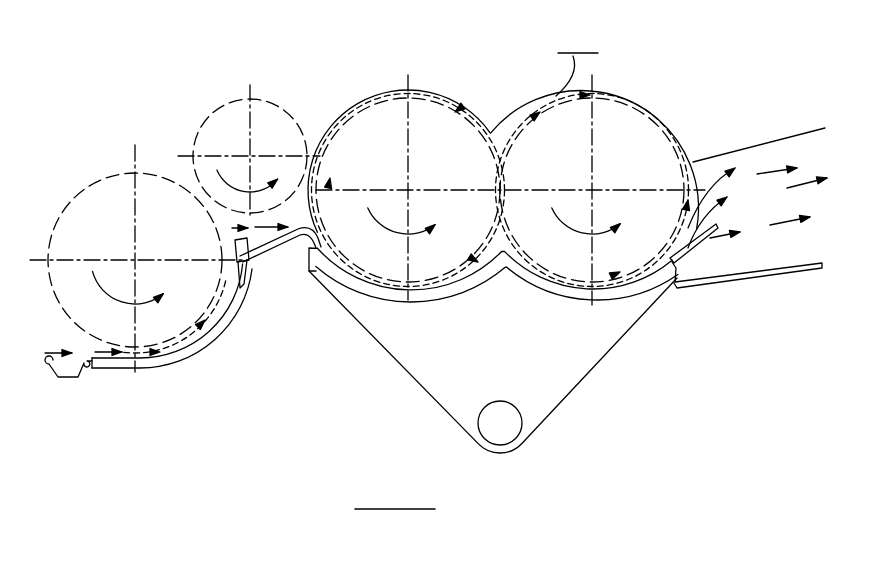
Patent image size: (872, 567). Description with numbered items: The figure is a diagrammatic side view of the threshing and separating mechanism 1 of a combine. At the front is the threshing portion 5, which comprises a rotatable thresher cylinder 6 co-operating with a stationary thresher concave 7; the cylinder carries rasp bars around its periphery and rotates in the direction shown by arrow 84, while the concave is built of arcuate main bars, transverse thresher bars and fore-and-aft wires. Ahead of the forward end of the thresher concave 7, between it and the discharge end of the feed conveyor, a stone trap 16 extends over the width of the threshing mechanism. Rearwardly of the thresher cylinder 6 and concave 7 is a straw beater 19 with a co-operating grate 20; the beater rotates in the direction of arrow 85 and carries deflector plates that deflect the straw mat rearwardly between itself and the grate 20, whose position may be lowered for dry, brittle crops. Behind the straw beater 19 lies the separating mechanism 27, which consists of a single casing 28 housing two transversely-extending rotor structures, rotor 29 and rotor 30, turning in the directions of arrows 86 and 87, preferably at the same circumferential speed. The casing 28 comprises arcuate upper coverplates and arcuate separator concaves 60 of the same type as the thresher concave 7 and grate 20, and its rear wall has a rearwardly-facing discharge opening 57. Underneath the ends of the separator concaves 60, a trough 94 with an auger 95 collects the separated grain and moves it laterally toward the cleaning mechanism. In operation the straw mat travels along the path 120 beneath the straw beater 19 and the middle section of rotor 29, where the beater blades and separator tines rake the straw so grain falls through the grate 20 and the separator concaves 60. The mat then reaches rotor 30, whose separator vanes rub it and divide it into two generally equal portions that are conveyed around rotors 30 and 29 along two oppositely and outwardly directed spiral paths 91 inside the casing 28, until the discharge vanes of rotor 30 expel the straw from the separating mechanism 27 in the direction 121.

The threshing and separating mechanism 1 is at (339, 92).
The threshing portion 5 is at (107, 150).
The thresher cylinder 6 is at (62, 210).
The thresher concave 7 is at (152, 372).
The stone trap 16 is at (72, 378).
The straw beater 19 is at (282, 106).
The grate 20 is at (272, 245).
The separating mechanism 27 is at (468, 98).
The casing 28 is at (640, 105).
The rotor 29 is at (430, 105).
The rotor 30 is at (690, 152).
The discharge opening 57 is at (745, 148).
The separator concave 60 is at (355, 298).
The arrow 84 is at (94, 265).
The arrow 85 is at (225, 163).
The arrow 86 is at (370, 210).
The arrow 87 is at (552, 212).
The spiral paths 91 is at (512, 125).
The trough 94 is at (570, 390).
The auger 95 is at (540, 425).
The path 120 is at (306, 266).
The direction 121 is at (806, 182).